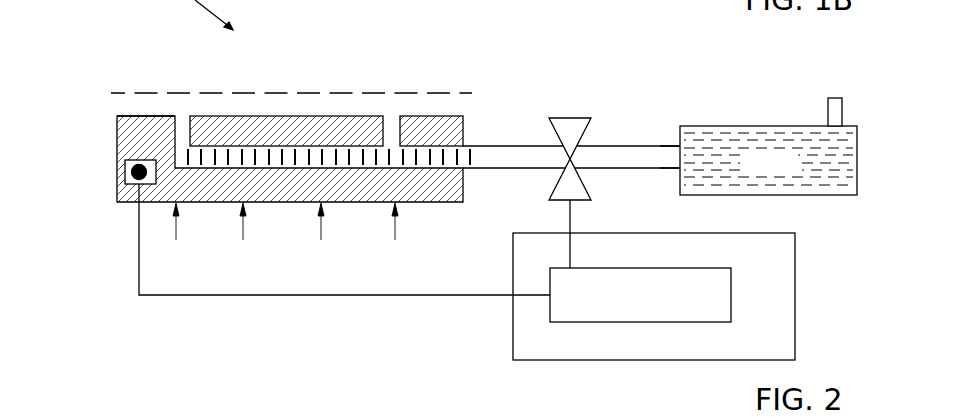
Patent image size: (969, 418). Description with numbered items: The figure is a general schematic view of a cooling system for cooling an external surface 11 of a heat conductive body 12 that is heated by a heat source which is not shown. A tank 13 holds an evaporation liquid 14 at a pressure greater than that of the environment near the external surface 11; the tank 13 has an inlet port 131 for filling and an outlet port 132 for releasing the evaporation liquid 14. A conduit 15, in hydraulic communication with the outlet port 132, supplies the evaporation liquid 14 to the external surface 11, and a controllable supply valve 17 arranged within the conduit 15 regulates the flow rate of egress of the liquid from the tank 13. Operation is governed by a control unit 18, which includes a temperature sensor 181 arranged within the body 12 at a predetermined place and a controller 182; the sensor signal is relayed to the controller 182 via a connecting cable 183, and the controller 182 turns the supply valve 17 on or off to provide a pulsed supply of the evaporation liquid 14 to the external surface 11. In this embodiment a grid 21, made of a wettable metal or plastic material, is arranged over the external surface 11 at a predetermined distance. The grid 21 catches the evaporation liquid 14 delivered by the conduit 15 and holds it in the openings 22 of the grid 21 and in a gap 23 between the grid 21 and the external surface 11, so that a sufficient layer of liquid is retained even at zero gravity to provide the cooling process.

The external surface 11 is at (288, 115).
The heat conductive body 12 is at (117, 148).
The tank 13 is at (763, 126).
The inlet port 131 is at (832, 98).
The outlet port 132 is at (680, 155).
The evaporation liquid 14 is at (732, 150).
The conduit 15 is at (512, 146).
The controllable supply valve 17 is at (570, 118).
The control unit 18 is at (795, 300).
The temperature sensor 181 is at (125, 176).
The controller 182 is at (606, 322).
The connecting cable 183 is at (345, 295).
The grid 21 is at (153, 92).
The openings 22 is at (257, 92).
The gap 23 is at (125, 110).